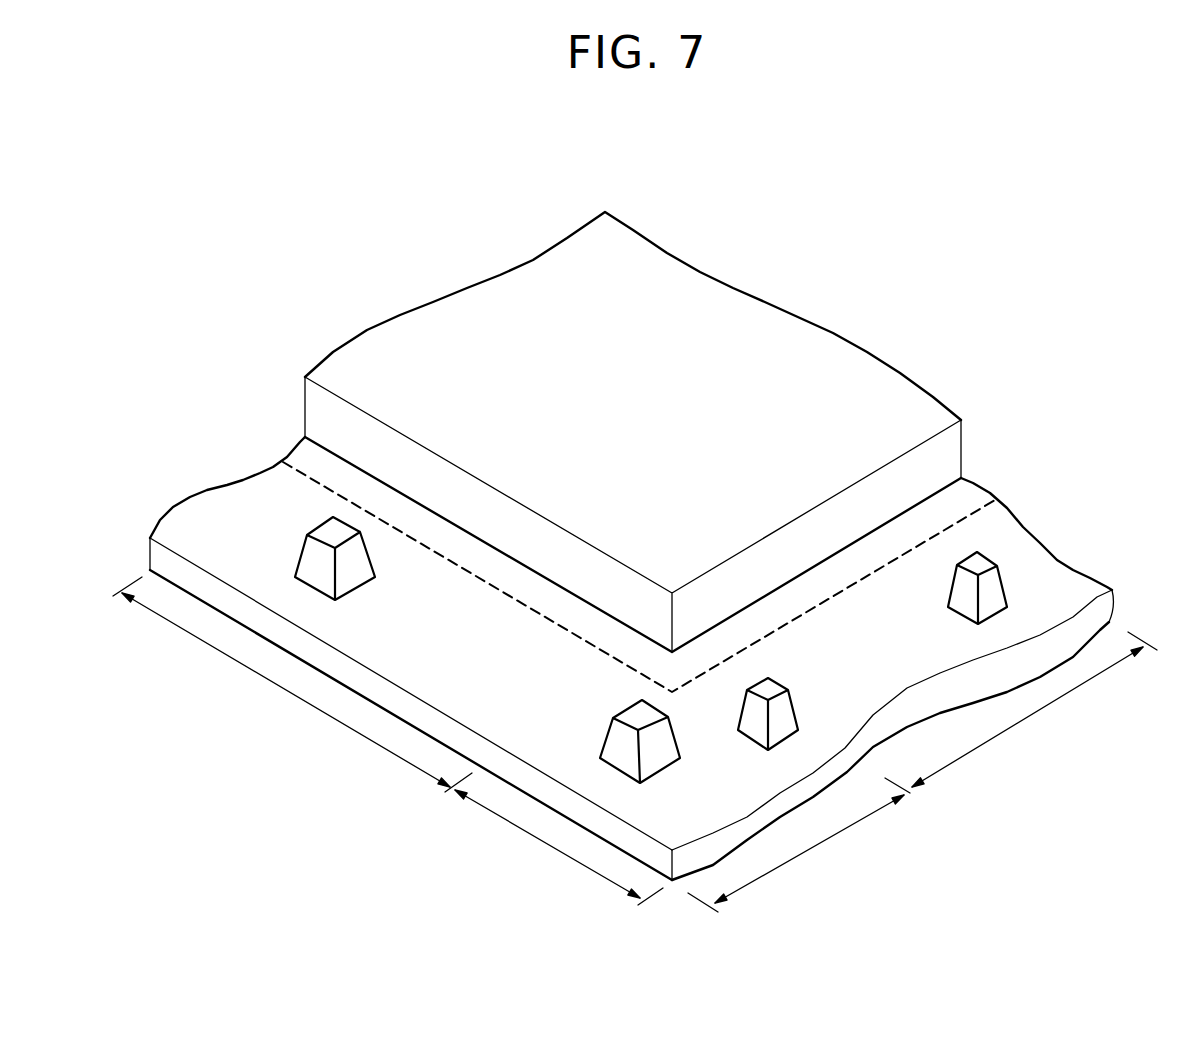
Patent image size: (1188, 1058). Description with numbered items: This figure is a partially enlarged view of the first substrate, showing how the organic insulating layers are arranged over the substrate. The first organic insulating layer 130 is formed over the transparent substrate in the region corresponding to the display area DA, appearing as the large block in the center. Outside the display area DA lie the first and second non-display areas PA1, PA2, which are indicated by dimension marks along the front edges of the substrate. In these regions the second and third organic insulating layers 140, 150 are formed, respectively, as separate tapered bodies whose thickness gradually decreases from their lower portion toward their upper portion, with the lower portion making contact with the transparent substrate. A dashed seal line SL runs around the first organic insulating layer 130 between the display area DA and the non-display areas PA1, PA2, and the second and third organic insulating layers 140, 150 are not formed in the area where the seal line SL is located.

The first organic insulating layer 130 is at (908, 396).
The second organic insulating layer 140 is at (333, 535).
The third organic insulating layer 150 is at (987, 593).
The seal line SL is at (968, 497).
The display area DA is at (635, 682).
The first non-display area PA1 is at (799, 845).
The second non-display area PA2 is at (554, 839).